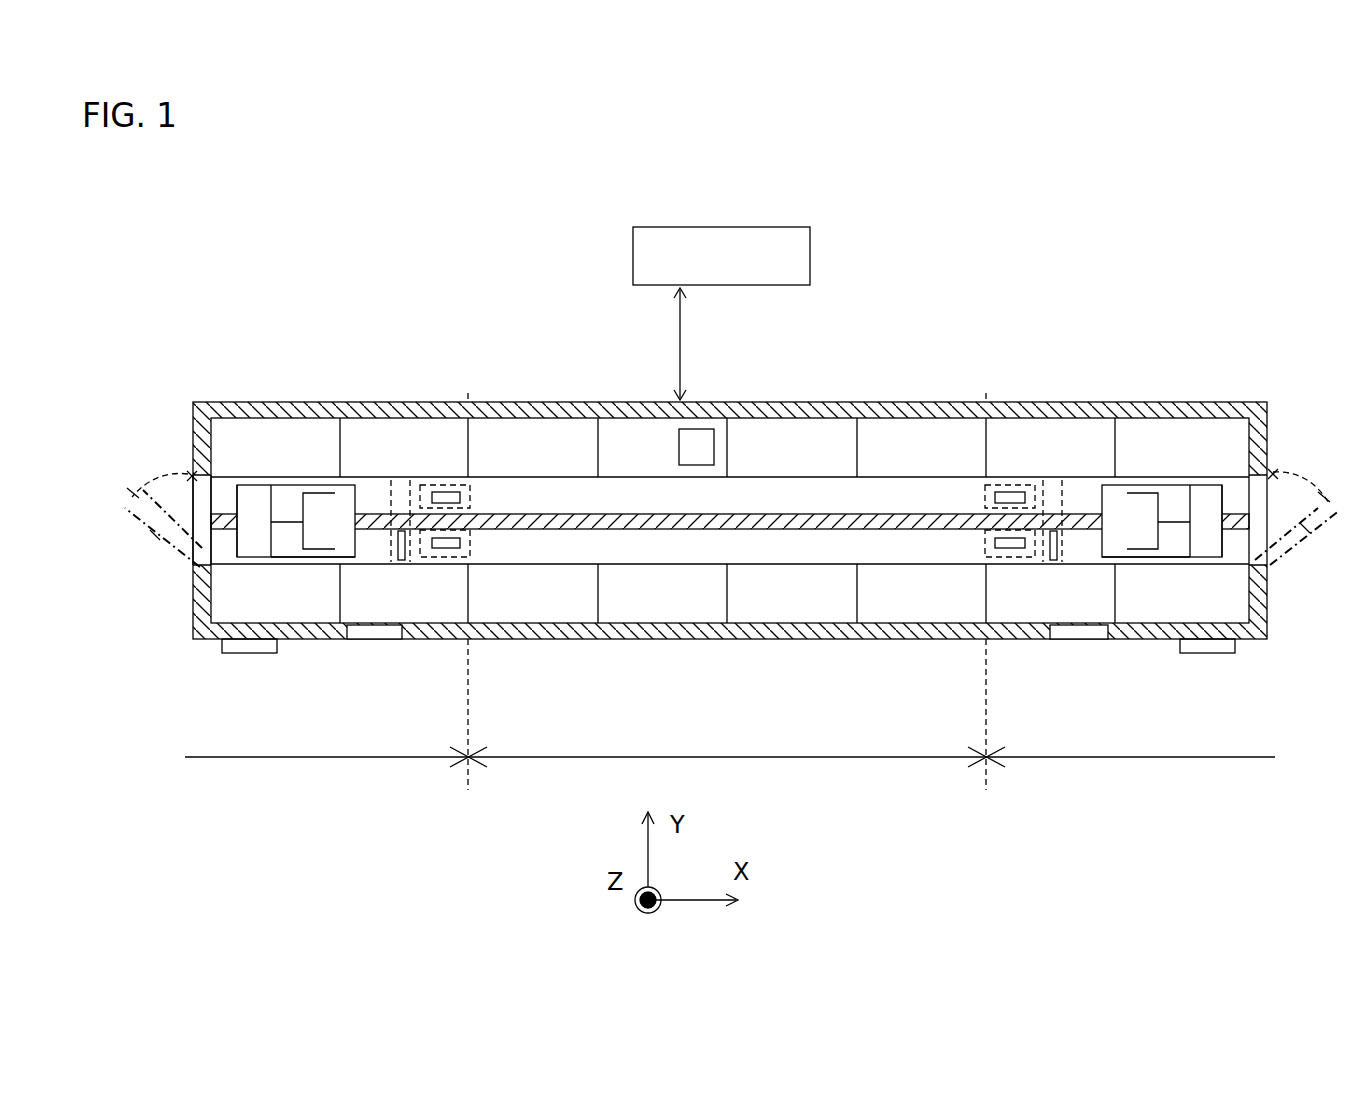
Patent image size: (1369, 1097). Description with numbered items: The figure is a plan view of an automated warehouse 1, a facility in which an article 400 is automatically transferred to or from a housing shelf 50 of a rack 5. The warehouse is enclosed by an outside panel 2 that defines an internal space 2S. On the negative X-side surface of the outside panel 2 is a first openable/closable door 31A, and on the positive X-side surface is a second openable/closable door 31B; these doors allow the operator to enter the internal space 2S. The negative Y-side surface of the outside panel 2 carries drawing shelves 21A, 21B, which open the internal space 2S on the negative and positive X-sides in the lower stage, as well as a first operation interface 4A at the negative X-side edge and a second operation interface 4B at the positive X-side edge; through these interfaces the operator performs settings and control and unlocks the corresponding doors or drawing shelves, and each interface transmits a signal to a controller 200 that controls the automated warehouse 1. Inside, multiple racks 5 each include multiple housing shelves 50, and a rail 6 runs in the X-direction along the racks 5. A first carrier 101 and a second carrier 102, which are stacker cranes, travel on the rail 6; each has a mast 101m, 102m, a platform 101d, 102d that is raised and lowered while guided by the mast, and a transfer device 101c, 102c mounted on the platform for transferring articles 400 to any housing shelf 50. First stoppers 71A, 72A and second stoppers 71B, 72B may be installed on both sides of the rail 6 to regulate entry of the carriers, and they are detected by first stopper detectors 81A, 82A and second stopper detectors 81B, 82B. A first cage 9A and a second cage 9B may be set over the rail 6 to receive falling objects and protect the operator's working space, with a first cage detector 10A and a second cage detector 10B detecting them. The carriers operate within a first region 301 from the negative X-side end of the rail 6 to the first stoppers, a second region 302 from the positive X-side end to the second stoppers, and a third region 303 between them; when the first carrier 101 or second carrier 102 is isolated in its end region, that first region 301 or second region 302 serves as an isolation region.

The automated warehouse 1 is at (1116, 310).
The outside panel 2 is at (592, 407).
The internal space 2S is at (222, 498).
The first operation interface 4A is at (235, 655).
The second operation interface 4B is at (1207, 655).
The rack 5 is at (796, 412).
The rail 6 is at (532, 513).
The first cage 9A is at (410, 479).
The second cage 9B is at (1052, 478).
The first cage detector 10A is at (402, 561).
The second cage detector 10B is at (1057, 559).
The drawing shelf 21A is at (375, 640).
The drawing shelf 21B is at (1072, 640).
The first openable/closable door 31A is at (150, 548).
The second openable/closable door 31B is at (1312, 537).
The housing shelf 50 is at (896, 432).
The first stopper 71A is at (468, 484).
The second stopper 71B is at (1008, 484).
The first stopper 72A is at (466, 565).
The second stopper 72B is at (988, 562).
The first stopper detector 81A is at (438, 487).
The second stopper detector 81B is at (1013, 490).
The first stopper detector 82A is at (445, 555).
The second stopper detector 82B is at (1022, 553).
The first carrier 101 is at (258, 484).
The transfer device 101c is at (320, 492).
The platform 101d is at (298, 549).
The mast 101m is at (247, 546).
The second carrier 102 is at (1183, 484).
The transfer device 102c is at (1134, 493).
The platform 102d is at (1175, 540).
The mast 102m is at (1205, 540).
The controller 200 is at (810, 262).
The first region 301 is at (336, 612).
The second region 302 is at (1121, 612).
The third region 303 is at (727, 780).
The article 400 is at (694, 429).